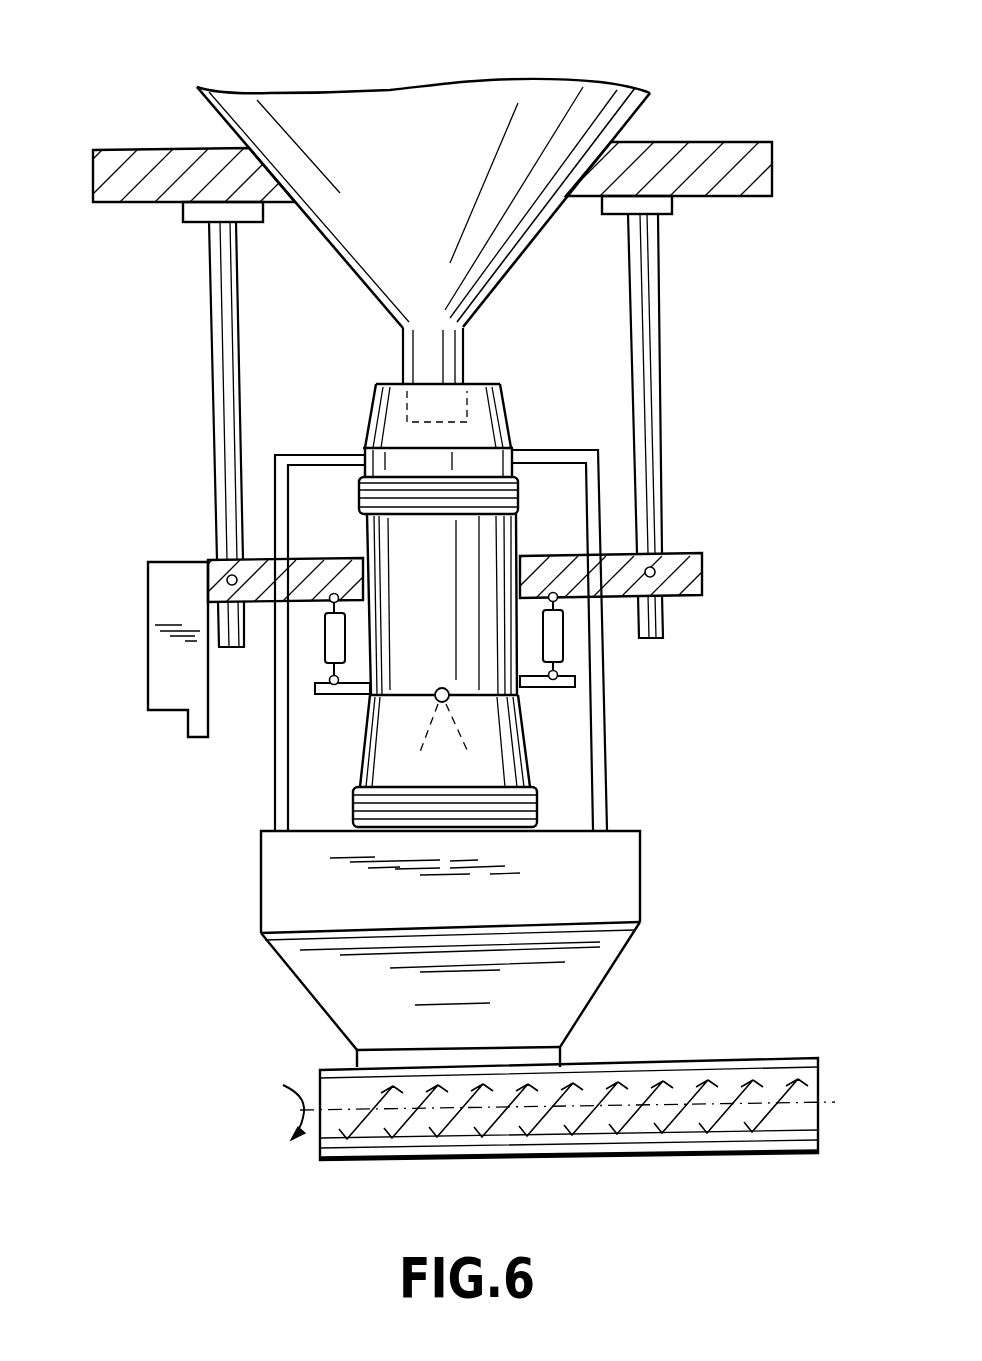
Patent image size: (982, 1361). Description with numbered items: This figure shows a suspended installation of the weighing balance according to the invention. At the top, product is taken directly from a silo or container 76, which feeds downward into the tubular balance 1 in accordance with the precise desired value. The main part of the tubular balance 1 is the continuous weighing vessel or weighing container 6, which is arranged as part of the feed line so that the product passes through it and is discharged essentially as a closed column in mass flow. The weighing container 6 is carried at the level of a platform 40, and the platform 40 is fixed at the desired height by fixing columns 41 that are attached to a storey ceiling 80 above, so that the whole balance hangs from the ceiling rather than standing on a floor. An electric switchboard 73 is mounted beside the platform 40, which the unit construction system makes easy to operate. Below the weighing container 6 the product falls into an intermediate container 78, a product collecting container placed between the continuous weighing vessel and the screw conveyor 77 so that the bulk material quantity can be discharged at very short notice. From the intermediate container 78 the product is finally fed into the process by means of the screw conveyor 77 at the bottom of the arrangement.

The tubular balance 1 is at (468, 655).
The weighing container 6 is at (530, 637).
The platform 40 is at (682, 550).
The supports 41 is at (215, 330).
The electric switchboard 73 is at (173, 580).
The silo or container 76 is at (572, 88).
The screw conveyor 77 is at (688, 1067).
The intermediate container 78 is at (630, 880).
The storey ceiling 80 is at (160, 185).